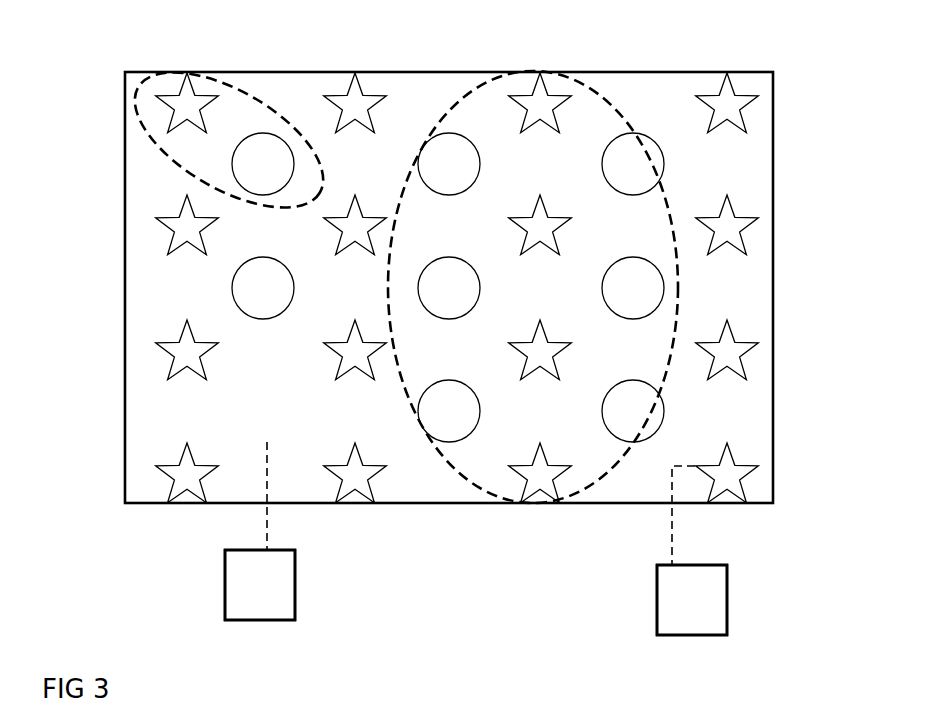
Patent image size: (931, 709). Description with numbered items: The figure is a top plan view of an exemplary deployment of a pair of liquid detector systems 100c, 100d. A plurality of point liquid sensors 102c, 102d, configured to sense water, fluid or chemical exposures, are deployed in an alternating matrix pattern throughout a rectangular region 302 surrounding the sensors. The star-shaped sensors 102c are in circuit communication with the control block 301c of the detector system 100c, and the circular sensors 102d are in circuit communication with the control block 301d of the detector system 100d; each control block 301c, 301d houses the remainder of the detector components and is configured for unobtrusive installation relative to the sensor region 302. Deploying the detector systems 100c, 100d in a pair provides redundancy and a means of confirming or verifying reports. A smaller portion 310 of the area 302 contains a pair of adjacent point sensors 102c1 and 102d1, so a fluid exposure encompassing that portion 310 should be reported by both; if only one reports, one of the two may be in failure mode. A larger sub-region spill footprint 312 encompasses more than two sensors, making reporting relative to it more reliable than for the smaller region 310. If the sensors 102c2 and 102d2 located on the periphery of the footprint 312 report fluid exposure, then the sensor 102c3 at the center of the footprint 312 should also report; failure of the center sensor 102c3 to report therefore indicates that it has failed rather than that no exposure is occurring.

The region 302 is at (449, 317).
The portion 310 is at (199, 140).
The sub-region spill footprint 312 is at (520, 327).
The point liquid sensor 102c is at (749, 487).
The point sensor 102c1 is at (125, 86).
The sensor 102c2 is at (615, 82).
The sensor 102c3 is at (673, 209).
The point liquid sensor 102d is at (176, 403).
The point sensor 102d1 is at (213, 105).
The sensor 102d2 is at (395, 113).
The control block 301d is at (211, 585).
The control block 301c is at (631, 600).
The detector system 100d is at (190, 556).
The detector system 100c is at (758, 564).